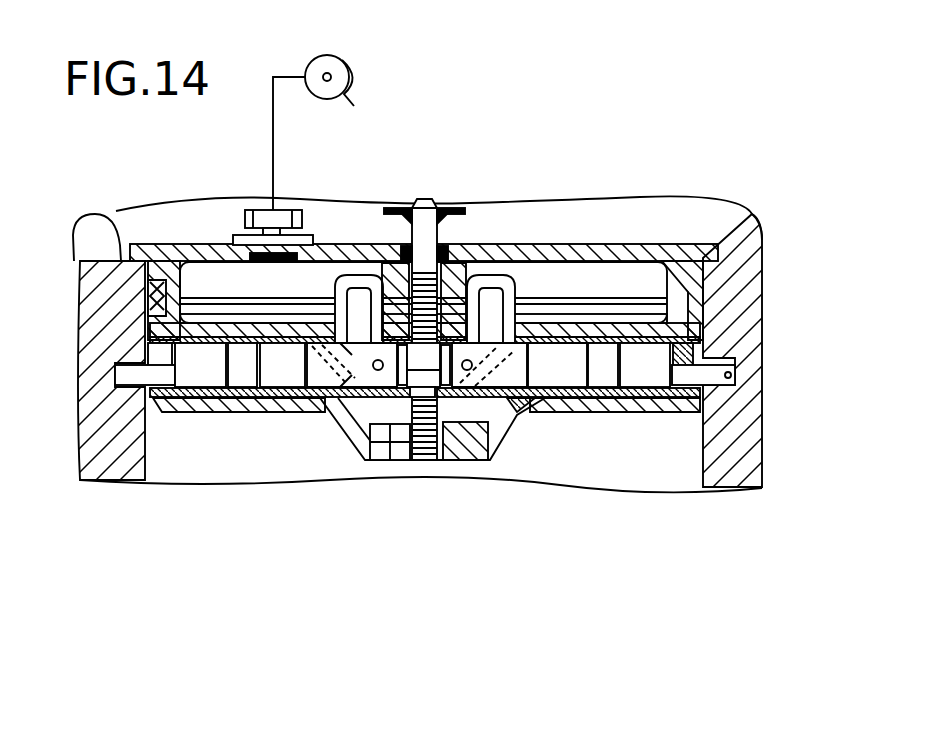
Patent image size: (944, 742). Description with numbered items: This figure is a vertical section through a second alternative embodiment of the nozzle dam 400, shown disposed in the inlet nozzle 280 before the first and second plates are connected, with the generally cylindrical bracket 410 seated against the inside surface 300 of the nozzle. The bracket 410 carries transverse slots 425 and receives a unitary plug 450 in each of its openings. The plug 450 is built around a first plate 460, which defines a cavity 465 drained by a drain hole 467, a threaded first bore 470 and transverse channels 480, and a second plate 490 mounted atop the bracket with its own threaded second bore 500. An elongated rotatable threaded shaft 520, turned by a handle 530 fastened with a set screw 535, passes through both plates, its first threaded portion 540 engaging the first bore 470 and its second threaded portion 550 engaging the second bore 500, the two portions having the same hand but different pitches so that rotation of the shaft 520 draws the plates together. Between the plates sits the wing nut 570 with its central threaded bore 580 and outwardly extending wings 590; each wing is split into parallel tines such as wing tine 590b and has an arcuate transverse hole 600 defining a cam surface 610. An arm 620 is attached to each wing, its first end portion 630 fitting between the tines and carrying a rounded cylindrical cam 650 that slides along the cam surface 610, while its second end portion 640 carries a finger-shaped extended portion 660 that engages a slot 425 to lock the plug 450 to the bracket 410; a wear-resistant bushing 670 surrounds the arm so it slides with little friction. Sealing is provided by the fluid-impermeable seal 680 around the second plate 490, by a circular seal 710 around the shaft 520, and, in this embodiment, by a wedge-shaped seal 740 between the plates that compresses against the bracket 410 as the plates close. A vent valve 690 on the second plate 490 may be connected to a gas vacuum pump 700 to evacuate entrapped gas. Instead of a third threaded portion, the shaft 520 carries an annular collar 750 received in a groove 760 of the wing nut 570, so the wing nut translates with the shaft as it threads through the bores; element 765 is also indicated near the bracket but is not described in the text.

The inlet nozzle 280 is at (96, 474).
The inside surface 300 is at (82, 306).
The nozzle dam 400 is at (612, 185).
The bracket 410 is at (114, 212).
The transverse slots 425 is at (737, 368).
The plug 450 is at (707, 232).
The first plate 460 is at (240, 404).
The cavity 465 is at (322, 410).
The drain hole 467 is at (370, 448).
The first bore 470 is at (412, 461).
The channels 480 is at (593, 399).
The second plate 490 is at (643, 252).
The second bore 500 is at (330, 353).
The threaded shaft 520 is at (437, 241).
The handle 530 is at (458, 209).
The set screw 535 is at (421, 202).
The first threaded portion 540 is at (433, 461).
The second threaded portion 550 is at (386, 263).
The wing nut 570 is at (496, 270).
The threaded bore 580 is at (335, 373).
The wing 590 is at (514, 262).
The wing tine 590b is at (520, 294).
The transverse hole 600 is at (341, 291).
The cam surface 610 is at (524, 362).
The arm 620 is at (638, 350).
The first end portion 630 is at (509, 404).
The second end portion 640 is at (633, 380).
The cam 650 is at (481, 394).
The extended portion 660 is at (676, 406).
The bushing 670 is at (558, 400).
The seal 680 is at (154, 251).
The vent valve 690 is at (264, 213).
The gas vacuum pump 700 is at (331, 132).
The circular seal 710 is at (407, 252).
The wedge-shaped seal 740 is at (182, 281).
The annular collar 750 is at (440, 425).
The groove 760 is at (405, 391).
The block corner 765 is at (763, 236).